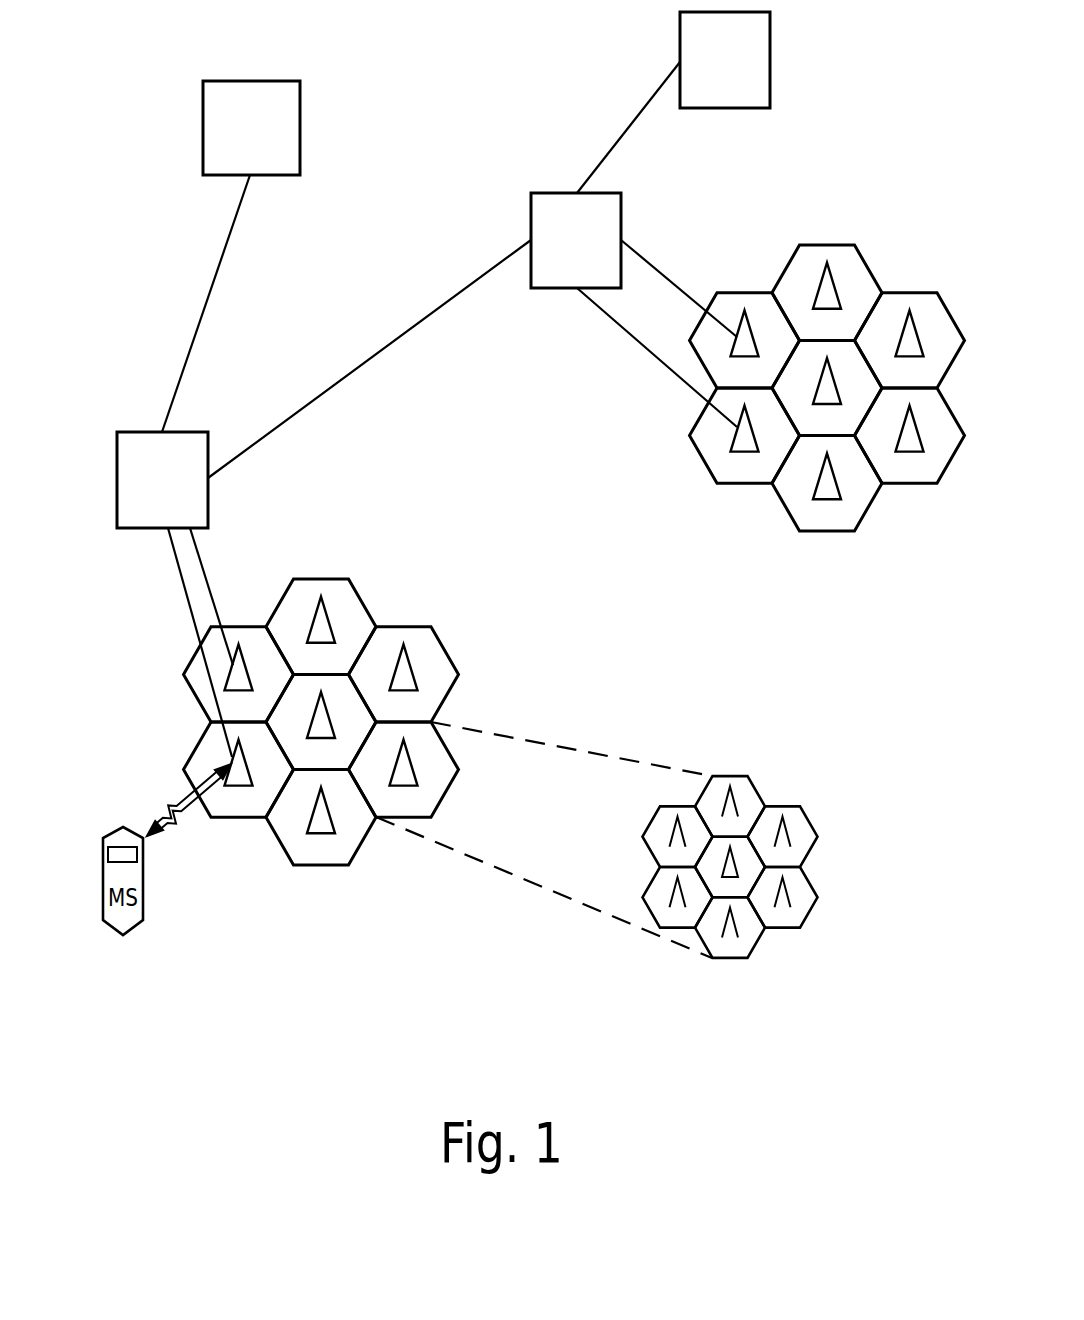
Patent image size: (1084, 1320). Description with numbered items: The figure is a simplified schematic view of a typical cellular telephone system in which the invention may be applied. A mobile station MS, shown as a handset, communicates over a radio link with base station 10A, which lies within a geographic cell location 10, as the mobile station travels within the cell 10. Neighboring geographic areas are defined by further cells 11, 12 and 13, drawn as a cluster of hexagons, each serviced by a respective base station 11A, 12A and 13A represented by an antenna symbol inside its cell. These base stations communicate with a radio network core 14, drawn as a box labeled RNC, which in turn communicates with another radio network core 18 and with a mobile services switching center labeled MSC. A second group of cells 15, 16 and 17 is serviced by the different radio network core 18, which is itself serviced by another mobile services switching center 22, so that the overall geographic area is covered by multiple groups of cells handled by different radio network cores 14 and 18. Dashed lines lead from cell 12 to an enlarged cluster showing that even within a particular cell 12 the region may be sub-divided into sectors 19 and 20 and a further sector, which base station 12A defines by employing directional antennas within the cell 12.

The cell 10 is at (234, 820).
The base station 10A is at (233, 785).
The cell 11 is at (322, 867).
The base station 11A is at (332, 813).
The cell 12 is at (443, 797).
The base station 12A is at (413, 762).
The cell 13 is at (195, 697).
The base station 13A is at (250, 660).
The radio network core 14 is at (117, 487).
The cell 15 is at (703, 465).
The cell 16 is at (785, 507).
The cell 17 is at (900, 486).
The radio network core 18 is at (556, 288).
The sector 19 is at (763, 787).
The sector 20 is at (810, 820).
The mobile services switching center 22 is at (771, 53).